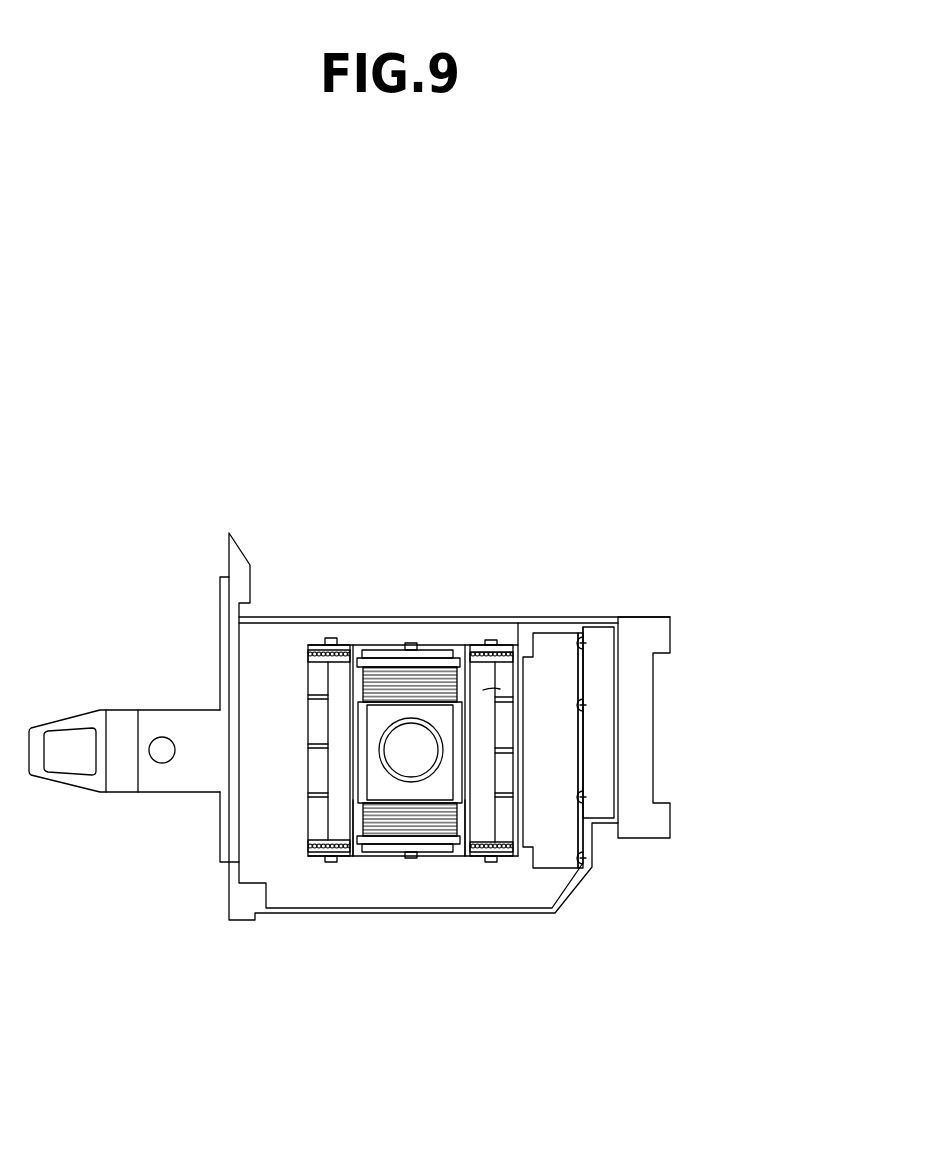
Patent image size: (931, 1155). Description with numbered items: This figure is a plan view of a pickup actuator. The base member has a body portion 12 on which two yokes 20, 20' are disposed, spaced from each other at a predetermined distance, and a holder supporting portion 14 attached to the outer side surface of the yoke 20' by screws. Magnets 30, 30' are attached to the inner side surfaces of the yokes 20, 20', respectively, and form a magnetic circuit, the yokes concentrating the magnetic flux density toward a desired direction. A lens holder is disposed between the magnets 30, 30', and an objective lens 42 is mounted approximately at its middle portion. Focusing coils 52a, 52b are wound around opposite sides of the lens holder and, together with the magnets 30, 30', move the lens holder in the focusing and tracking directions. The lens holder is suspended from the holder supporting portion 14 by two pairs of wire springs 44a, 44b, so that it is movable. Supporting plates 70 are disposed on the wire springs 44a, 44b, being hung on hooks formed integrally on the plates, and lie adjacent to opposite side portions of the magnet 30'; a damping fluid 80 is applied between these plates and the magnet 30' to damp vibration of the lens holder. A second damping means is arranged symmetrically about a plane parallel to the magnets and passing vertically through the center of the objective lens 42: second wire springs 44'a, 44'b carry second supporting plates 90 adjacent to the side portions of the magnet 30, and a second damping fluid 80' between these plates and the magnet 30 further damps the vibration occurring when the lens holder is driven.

The body portion 12 is at (655, 818).
The holder supporting portion 14 is at (563, 750).
The yoke 20 is at (173, 726).
The yoke 20' is at (605, 750).
The magnet 30 is at (246, 737).
The magnet 30' is at (628, 721).
The objective lens 42 is at (402, 750).
The wire spring 44a is at (458, 643).
The second wire spring 44'a is at (413, 691).
The wire spring 44b is at (462, 858).
The second wire spring 44'b is at (413, 918).
The focusing coil 52a is at (405, 682).
The focusing coil 52b is at (414, 820).
The supporting plate 70 is at (490, 640).
The damping fluid 80 is at (536, 753).
The second damping fluid 80' is at (240, 725).
The second supporting plate 90 is at (334, 640).